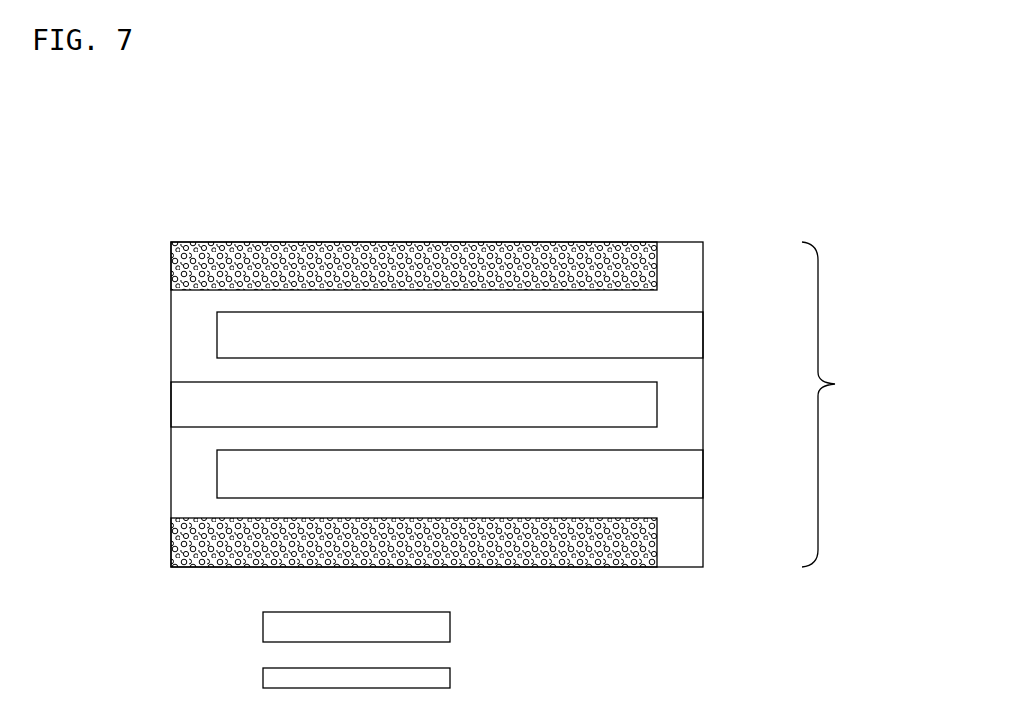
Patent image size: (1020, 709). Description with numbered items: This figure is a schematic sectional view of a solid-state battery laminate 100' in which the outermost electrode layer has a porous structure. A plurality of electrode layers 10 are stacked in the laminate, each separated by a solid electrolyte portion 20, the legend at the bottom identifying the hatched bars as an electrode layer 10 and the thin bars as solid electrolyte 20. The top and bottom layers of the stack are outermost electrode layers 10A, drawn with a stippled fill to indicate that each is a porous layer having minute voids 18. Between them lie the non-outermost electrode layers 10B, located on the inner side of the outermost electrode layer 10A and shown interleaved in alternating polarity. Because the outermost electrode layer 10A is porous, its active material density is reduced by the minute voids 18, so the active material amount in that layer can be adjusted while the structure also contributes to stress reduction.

The solid-state battery laminate 100' is at (430, 335).
The minute voids 18 is at (590, 250).
The outermost electrode layer 10A is at (660, 262).
The non-outermost electrode layer 10B is at (690, 333).
The electrode layer 10 is at (440, 628).
The solid electrolyte portion 20 is at (440, 680).